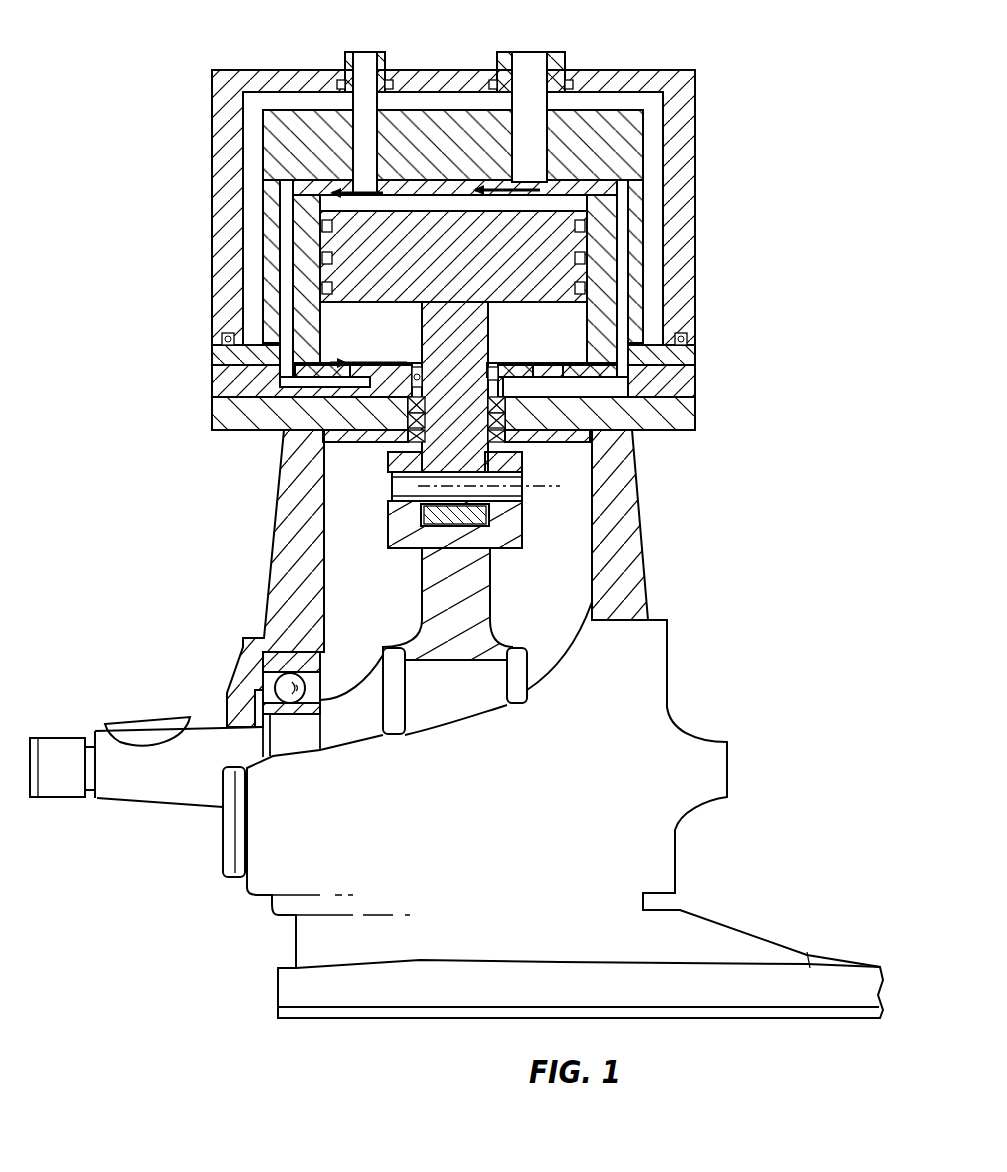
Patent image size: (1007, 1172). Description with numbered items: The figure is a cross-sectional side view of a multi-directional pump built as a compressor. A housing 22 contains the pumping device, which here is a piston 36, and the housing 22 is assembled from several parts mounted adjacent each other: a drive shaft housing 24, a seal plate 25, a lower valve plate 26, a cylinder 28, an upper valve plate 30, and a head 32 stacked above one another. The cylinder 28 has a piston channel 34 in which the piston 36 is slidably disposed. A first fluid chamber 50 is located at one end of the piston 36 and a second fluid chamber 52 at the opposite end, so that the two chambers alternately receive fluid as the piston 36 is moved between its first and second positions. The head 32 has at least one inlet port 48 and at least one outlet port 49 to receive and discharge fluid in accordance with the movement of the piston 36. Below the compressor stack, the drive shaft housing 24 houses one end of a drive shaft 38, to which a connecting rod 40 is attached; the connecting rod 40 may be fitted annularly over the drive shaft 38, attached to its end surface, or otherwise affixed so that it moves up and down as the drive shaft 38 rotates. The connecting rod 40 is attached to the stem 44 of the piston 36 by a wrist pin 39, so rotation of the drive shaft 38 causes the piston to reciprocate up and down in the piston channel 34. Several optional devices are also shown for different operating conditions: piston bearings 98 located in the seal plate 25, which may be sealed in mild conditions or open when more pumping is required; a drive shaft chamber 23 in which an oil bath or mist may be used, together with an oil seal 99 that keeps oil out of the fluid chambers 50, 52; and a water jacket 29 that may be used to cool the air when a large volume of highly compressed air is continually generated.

The housing 22 is at (467, 348).
The drive shaft chamber 23 is at (437, 593).
The drive shaft housing 24 is at (672, 680).
The seal plate 25 is at (672, 430).
The lower valve plate 26 is at (697, 378).
The cylinder 28 is at (697, 353).
The water jacket 29 is at (212, 218).
The upper valve plate 30 is at (595, 193).
The head 32 is at (643, 140).
The piston channel 34 is at (333, 314).
The piston 36 is at (388, 280).
The drive shaft 38 is at (153, 803).
The wrist pin 39 is at (392, 525).
The connecting rod 40 is at (413, 581).
The stem 44 is at (523, 460).
The inlet port 48 is at (343, 62).
The outlet port 49 is at (550, 47).
The first fluid chamber 50 is at (418, 215).
The second fluid chamber 52 is at (537, 332).
The piston bearings 98 is at (420, 440).
The oil seal 99 is at (417, 370).